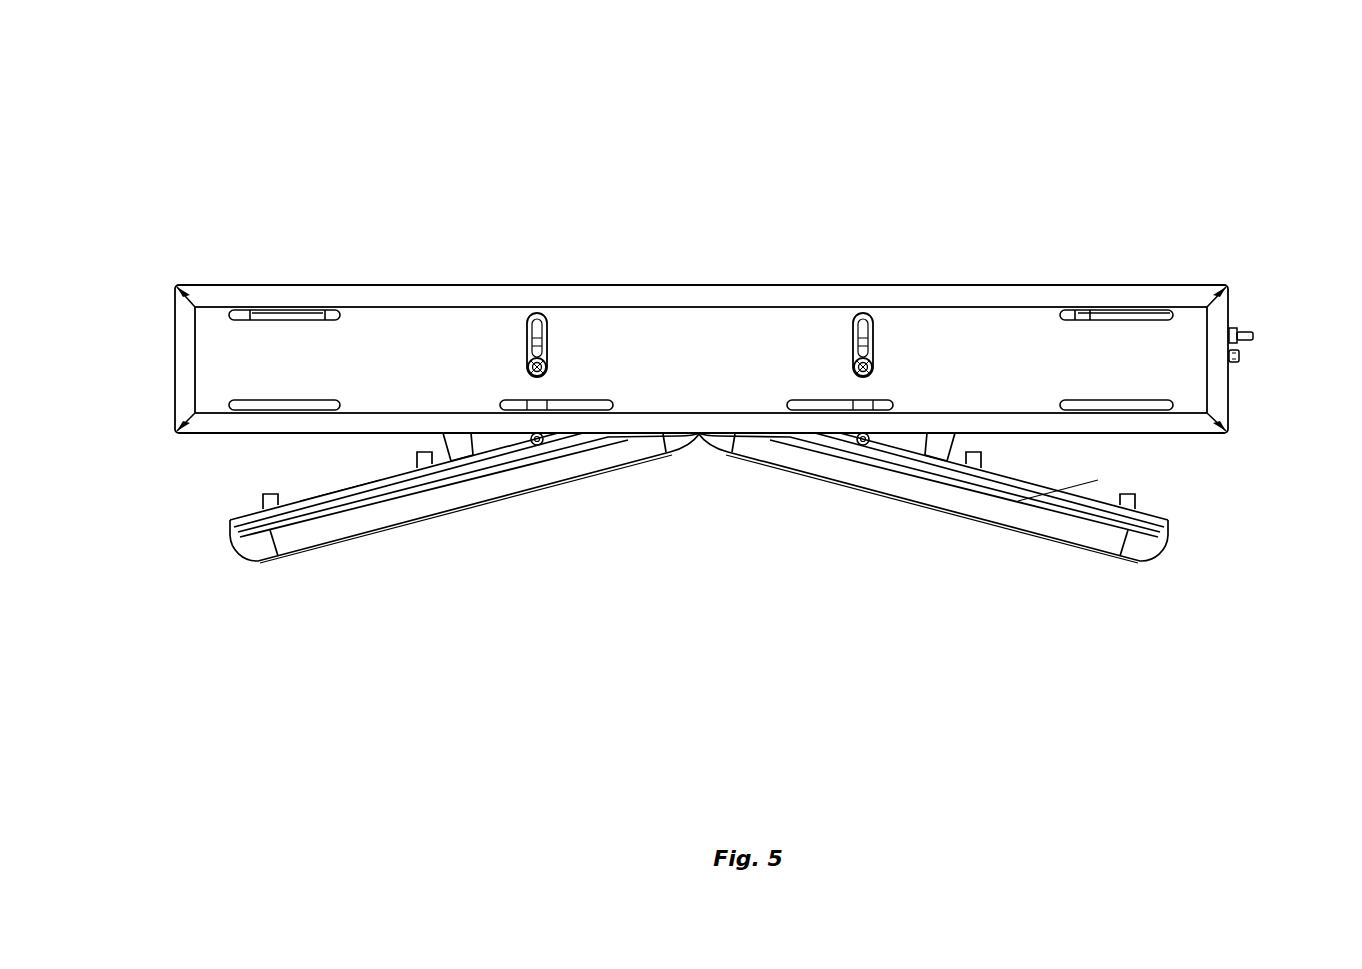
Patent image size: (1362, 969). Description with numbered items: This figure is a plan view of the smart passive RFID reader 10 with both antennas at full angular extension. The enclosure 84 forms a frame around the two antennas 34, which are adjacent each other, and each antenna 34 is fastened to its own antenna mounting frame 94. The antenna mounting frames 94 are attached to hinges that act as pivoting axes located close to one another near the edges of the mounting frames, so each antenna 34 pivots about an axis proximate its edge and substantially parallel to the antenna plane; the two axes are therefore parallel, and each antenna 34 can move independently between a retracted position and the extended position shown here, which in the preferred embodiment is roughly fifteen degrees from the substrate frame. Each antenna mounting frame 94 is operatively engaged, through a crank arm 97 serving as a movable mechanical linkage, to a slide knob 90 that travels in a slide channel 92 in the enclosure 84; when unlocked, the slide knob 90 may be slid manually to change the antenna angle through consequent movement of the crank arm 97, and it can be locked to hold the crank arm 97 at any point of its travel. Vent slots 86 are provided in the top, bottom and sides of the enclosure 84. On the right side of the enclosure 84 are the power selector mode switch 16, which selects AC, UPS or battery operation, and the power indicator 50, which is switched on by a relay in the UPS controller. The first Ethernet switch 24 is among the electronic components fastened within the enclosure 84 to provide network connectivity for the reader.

The smart passive RFID reader 10 is at (253, 134).
The power selector mode switch 16 is at (1253, 333).
The first Ethernet switch 24 is at (835, 482).
The antenna 34 is at (542, 485).
The power indicator 50 is at (1238, 355).
The enclosure 84 is at (747, 337).
The vent slots 86 is at (258, 408).
The slide knob 90 is at (548, 366).
The slide channel 92 is at (538, 324).
The antenna mounting frame 94 is at (358, 487).
The crank arm 97 is at (534, 441).